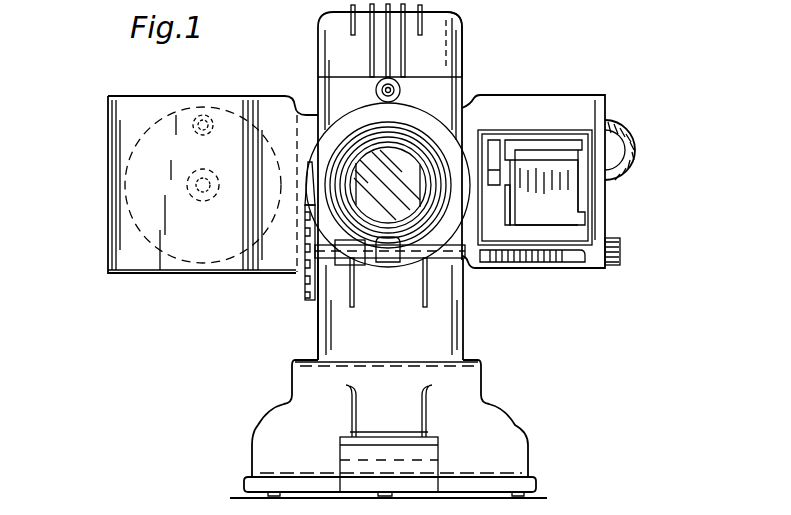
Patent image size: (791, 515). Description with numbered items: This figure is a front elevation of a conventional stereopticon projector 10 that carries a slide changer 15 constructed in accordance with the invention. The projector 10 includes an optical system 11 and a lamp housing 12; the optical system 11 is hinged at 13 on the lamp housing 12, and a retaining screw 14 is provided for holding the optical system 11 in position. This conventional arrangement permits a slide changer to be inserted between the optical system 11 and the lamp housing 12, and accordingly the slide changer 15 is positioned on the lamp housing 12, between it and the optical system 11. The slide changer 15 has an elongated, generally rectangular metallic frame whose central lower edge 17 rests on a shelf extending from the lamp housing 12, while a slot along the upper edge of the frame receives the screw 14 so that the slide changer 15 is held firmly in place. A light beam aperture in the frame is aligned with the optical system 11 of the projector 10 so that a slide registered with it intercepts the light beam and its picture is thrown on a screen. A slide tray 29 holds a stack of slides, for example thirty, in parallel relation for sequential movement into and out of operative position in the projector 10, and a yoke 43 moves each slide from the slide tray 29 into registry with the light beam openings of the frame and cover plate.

The stereopticon projector 10 is at (277, 72).
The optical system 11 is at (440, 130).
The lamp housing 12 is at (442, 27).
The hinge 13 is at (388, 378).
The retaining screw 14 is at (397, 88).
The slide changer 15 is at (118, 80).
The central lower edge 17 is at (446, 258).
The slide tray 29 is at (572, 162).
The yoke 43 is at (636, 157).